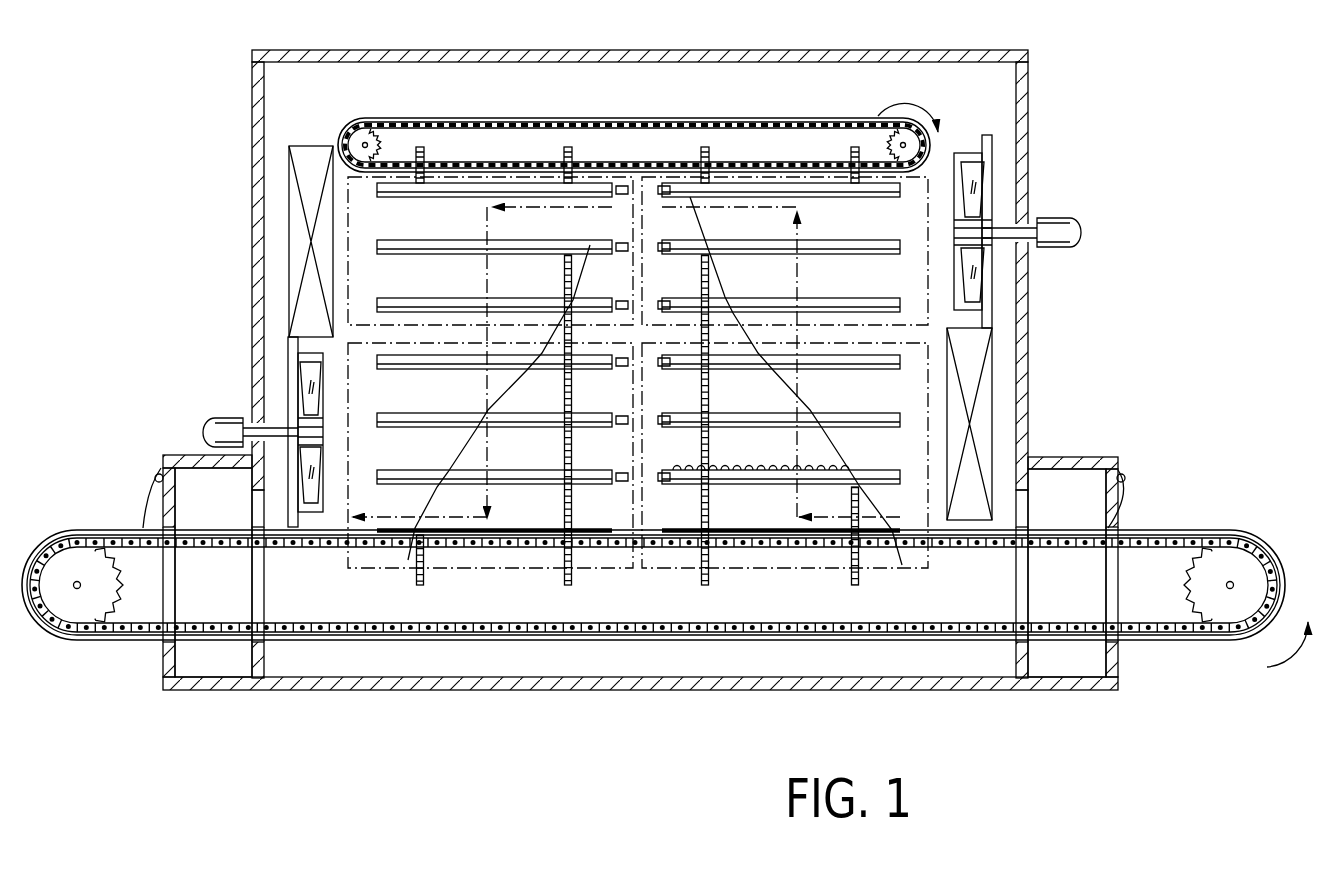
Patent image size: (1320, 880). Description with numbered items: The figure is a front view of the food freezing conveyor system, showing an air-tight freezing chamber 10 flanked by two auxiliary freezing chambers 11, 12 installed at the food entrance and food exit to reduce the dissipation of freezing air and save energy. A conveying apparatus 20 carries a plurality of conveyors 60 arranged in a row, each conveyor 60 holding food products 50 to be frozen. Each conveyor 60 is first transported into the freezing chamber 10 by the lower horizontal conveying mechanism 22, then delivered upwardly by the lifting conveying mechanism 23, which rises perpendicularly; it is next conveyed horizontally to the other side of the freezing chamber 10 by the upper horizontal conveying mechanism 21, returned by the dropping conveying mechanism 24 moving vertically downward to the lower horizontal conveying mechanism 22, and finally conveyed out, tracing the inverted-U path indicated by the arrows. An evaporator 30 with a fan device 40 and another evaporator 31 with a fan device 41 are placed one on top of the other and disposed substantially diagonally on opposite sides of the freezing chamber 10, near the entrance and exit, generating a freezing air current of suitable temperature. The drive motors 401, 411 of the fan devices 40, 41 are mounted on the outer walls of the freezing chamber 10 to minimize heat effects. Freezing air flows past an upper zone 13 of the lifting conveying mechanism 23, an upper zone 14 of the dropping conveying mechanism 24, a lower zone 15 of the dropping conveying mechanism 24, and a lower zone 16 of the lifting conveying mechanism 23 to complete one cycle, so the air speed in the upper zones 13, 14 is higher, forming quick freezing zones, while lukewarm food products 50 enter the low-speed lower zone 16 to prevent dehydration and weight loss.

The freezing chamber 10 is at (248, 147).
The auxiliary freezing chamber 11 is at (1088, 478).
The auxiliary freezing chamber 12 is at (180, 481).
The upper zone of the lifting conveying mechanism 13 is at (920, 298).
The upper zone of the dropping conveying mechanism 14 is at (347, 178).
The lower zone of the dropping conveying mechanism 15 is at (520, 570).
The lower zone of the lifting conveying mechanism 16 is at (780, 396).
The conveying apparatus 20 is at (665, 642).
The upper horizontal conveying mechanism 21 is at (638, 128).
The lower horizontal conveying mechanism 22 is at (1170, 643).
The lifting conveying mechanism 23 is at (706, 150).
The dropping conveying mechanism 24 is at (569, 148).
The evaporator 30 is at (992, 386).
The evaporator 31 is at (292, 243).
The fan device 40 is at (985, 163).
The fan device 41 is at (297, 392).
The food product 50 is at (725, 463).
The conveyor 60 is at (716, 483).
The drive motor 401 is at (1066, 232).
The drive motor 411 is at (207, 432).